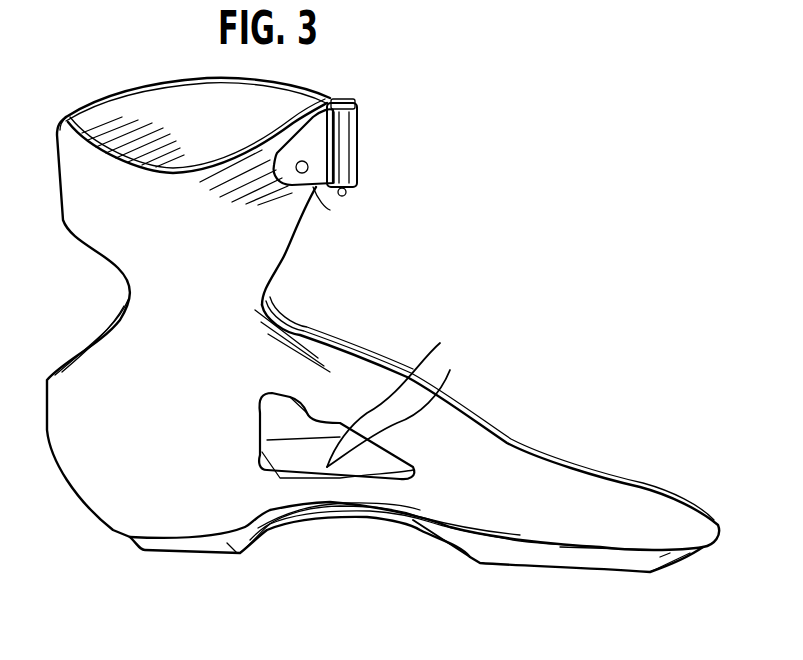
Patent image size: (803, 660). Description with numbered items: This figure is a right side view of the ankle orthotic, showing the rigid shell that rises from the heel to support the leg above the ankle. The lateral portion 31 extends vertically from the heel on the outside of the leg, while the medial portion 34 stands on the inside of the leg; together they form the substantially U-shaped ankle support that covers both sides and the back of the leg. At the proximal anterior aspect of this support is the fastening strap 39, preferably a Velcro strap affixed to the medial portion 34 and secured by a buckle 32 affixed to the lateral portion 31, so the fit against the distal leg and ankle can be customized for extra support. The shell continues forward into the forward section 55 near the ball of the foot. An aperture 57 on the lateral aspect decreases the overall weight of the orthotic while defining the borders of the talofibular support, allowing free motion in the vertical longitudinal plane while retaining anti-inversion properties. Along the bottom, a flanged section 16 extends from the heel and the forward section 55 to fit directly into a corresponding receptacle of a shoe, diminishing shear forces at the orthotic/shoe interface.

The flanged section 16 is at (480, 547).
The lateral portion 31 is at (194, 263).
The buckle 32 is at (316, 187).
The medial portion 34 is at (232, 133).
The fastening strap 39 is at (350, 105).
The forward section 55 is at (592, 527).
The aperture 57 is at (450, 370).